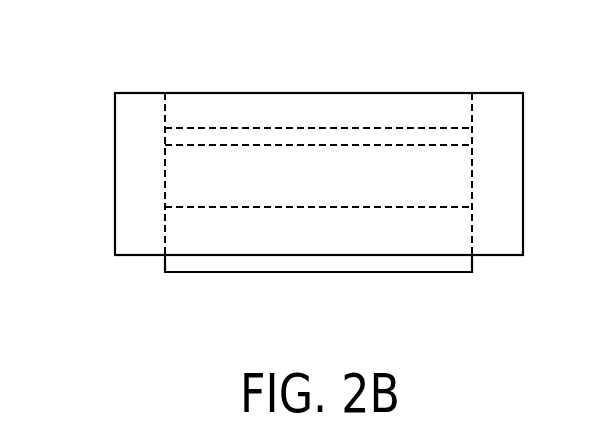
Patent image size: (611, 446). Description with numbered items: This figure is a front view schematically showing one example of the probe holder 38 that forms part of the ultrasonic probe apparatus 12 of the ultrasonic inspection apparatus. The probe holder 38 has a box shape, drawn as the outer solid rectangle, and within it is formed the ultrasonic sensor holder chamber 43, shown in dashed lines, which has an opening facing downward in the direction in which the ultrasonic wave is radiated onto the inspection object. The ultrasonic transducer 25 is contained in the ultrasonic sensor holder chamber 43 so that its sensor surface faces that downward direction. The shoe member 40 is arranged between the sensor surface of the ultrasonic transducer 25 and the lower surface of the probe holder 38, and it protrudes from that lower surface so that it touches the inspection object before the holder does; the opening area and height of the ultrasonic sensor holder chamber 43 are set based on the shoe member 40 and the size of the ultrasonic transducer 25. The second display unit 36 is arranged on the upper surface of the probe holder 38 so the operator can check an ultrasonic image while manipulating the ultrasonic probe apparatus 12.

The ultrasonic probe apparatus 12 is at (112, 92).
The ultrasonic transducer 25 is at (165, 175).
The second display unit 36 is at (395, 100).
The probe holder 38 is at (499, 93).
The shoe member 40 is at (232, 272).
The ultrasonic sensor holder chamber 43 is at (472, 178).